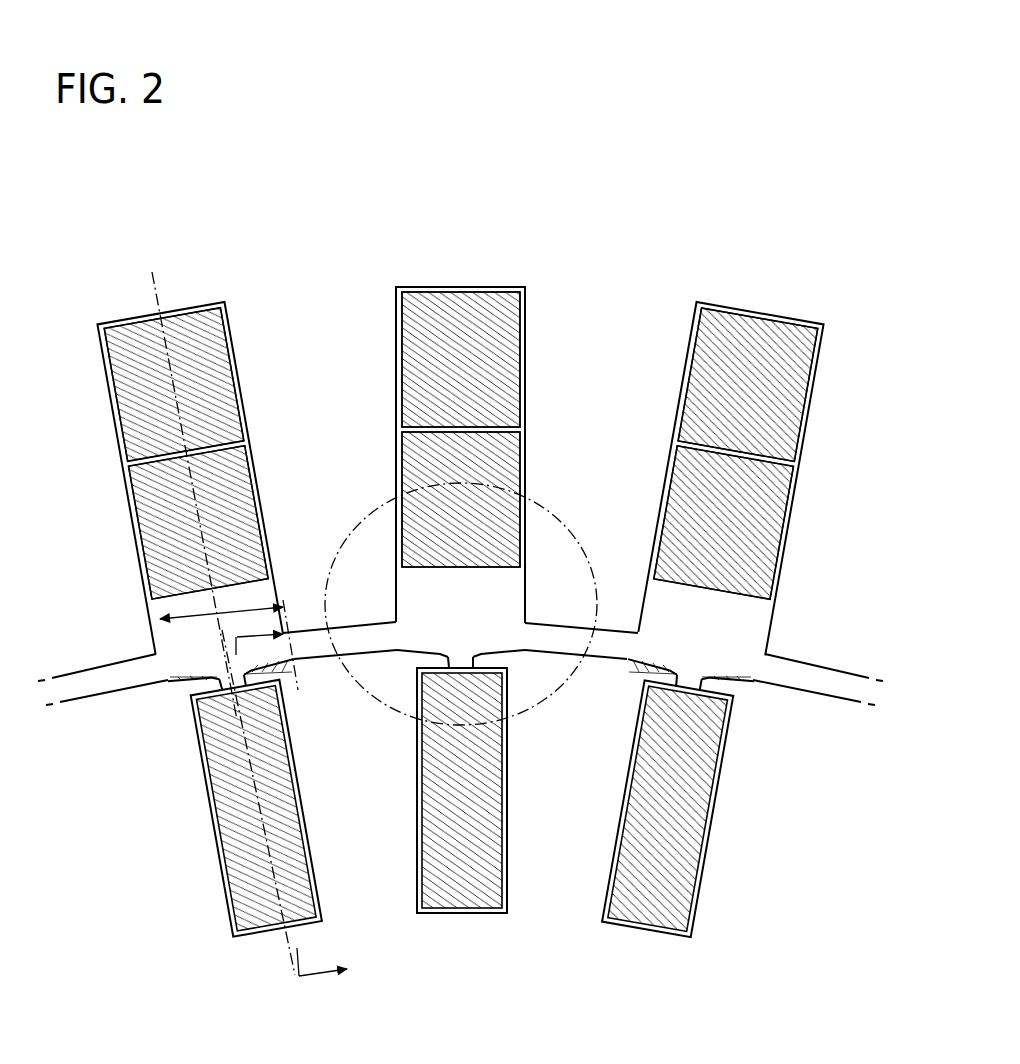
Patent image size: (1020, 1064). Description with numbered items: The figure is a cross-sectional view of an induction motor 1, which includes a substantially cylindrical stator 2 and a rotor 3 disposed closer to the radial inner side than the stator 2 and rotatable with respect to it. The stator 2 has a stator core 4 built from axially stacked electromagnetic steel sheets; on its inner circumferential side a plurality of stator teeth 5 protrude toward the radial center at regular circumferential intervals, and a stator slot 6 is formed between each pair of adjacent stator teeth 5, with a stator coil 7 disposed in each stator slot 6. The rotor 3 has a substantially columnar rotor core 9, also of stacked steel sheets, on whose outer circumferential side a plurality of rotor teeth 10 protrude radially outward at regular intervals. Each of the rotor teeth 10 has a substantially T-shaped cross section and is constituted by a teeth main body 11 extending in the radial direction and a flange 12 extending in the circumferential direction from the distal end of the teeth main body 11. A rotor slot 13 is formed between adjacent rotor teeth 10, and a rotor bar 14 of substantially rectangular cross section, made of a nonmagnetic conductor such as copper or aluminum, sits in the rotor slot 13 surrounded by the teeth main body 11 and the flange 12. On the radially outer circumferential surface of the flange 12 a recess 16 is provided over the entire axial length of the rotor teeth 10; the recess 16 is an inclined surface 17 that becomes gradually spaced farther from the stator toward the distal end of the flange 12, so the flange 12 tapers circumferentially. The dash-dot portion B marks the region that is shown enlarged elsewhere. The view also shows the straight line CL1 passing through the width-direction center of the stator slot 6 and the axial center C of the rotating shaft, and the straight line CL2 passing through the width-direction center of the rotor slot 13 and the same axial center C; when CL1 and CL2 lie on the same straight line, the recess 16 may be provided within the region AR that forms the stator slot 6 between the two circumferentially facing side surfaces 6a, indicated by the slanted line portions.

The induction motor 1 is at (720, 184).
The stator 2 is at (781, 246).
The rotor 3 is at (797, 908).
The stator core 4 is at (306, 272).
The stator teeth 5 is at (407, 590).
The stator slot 6 is at (493, 583).
The side surfaces 6a is at (402, 322).
The stator coil 7 is at (408, 368).
The rotor core 9 is at (406, 979).
The rotor teeth 10 is at (107, 682).
The teeth main body 11 is at (432, 762).
The flange 12 is at (467, 676).
The rotor slot 13 is at (221, 680).
The rotor bar 14 is at (225, 820).
The recess 16 is at (252, 670).
The inclined surface 17 is at (715, 678).
The portion B is at (393, 503).
The element AR is at (205, 603).
The axial center C is at (253, 803).
The straight line CL1 is at (162, 280).
The straight line CL2 is at (282, 948).